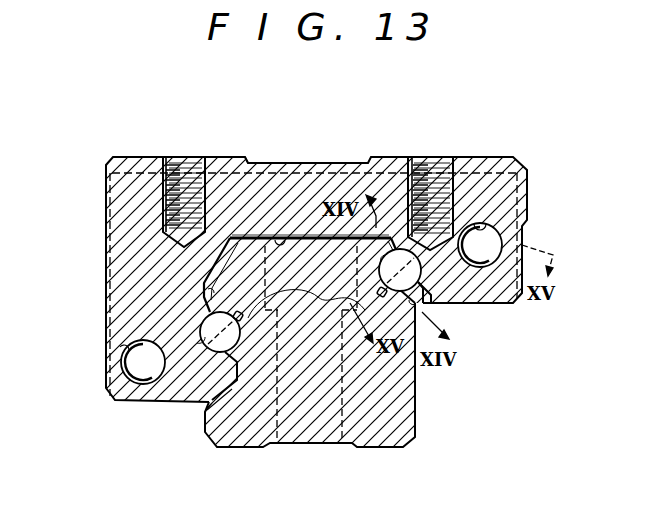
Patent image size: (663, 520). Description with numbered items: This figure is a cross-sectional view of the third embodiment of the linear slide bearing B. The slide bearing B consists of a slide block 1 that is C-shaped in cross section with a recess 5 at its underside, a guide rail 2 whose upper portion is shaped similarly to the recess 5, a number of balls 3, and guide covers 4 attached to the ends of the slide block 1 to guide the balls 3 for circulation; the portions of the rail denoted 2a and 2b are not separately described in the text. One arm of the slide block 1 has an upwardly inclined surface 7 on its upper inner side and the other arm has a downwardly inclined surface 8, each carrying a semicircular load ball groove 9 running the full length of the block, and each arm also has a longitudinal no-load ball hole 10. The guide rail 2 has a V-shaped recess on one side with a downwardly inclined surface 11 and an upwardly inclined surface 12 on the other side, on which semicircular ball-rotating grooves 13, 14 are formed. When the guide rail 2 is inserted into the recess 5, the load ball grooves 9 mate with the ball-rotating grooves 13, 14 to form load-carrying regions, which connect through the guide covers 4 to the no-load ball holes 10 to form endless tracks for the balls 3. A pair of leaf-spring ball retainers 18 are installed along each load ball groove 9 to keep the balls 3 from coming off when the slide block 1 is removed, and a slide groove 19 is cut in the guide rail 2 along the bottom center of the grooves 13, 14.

The linear slide bearing B is at (97, 157).
The slide block 1 is at (313, 160).
The guide rail 2 is at (418, 424).
The left side portion of lower part 2a is at (112, 310).
The right side portion of lower part 2b is at (500, 305).
The balls 3 is at (124, 378).
The guide covers 4 is at (498, 178).
The recess 5 is at (280, 238).
The upwardly inclined surface 7 is at (120, 281).
The downwardly inclined surface 8 is at (425, 300).
The load ball groove 9 is at (403, 249).
The no-load ball hole 10 is at (124, 350).
The downwardly inclined surface 11 is at (226, 395).
The upwardly inclined surface 12 is at (386, 237).
The ball-rotating groove 13 is at (243, 158).
The ball-rotating groove 14 is at (378, 259).
The ball retainer 18 is at (205, 342).
The slide groove 19 is at (306, 312).